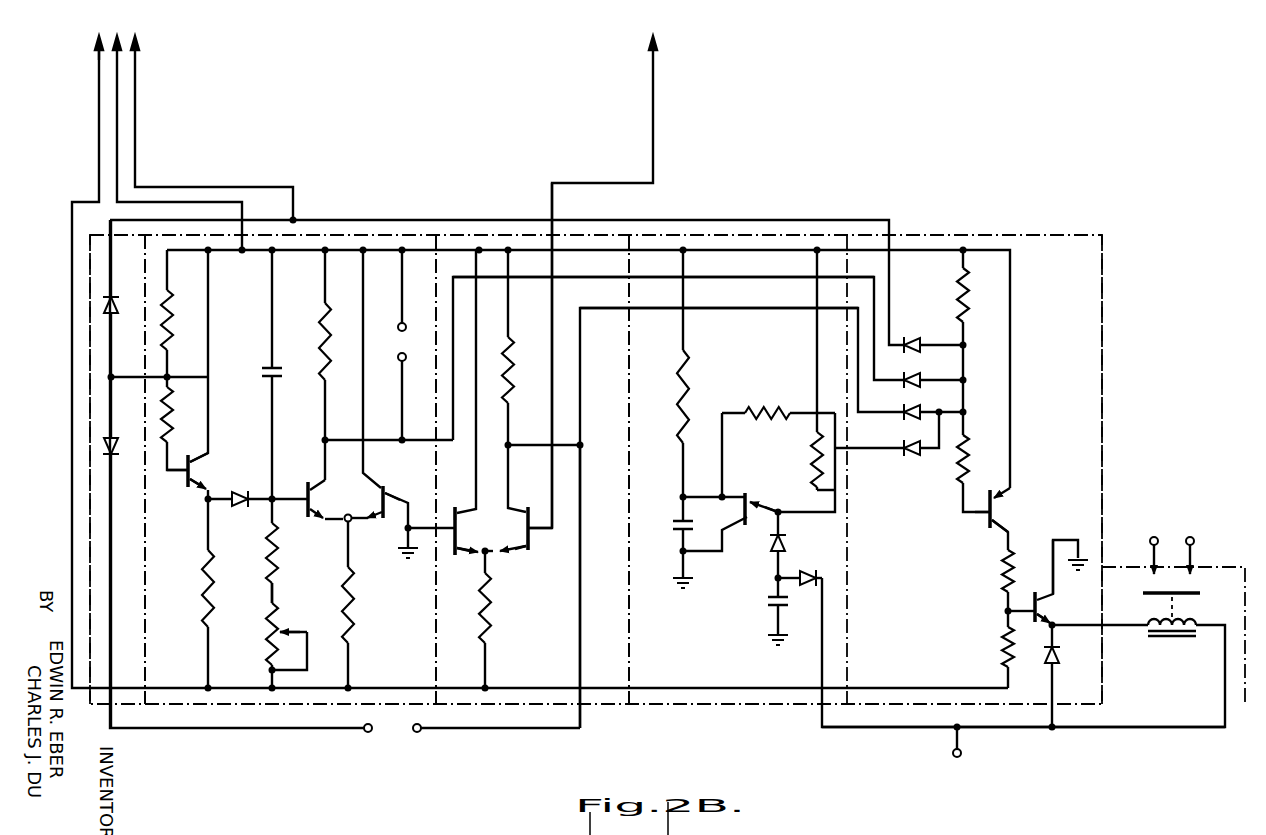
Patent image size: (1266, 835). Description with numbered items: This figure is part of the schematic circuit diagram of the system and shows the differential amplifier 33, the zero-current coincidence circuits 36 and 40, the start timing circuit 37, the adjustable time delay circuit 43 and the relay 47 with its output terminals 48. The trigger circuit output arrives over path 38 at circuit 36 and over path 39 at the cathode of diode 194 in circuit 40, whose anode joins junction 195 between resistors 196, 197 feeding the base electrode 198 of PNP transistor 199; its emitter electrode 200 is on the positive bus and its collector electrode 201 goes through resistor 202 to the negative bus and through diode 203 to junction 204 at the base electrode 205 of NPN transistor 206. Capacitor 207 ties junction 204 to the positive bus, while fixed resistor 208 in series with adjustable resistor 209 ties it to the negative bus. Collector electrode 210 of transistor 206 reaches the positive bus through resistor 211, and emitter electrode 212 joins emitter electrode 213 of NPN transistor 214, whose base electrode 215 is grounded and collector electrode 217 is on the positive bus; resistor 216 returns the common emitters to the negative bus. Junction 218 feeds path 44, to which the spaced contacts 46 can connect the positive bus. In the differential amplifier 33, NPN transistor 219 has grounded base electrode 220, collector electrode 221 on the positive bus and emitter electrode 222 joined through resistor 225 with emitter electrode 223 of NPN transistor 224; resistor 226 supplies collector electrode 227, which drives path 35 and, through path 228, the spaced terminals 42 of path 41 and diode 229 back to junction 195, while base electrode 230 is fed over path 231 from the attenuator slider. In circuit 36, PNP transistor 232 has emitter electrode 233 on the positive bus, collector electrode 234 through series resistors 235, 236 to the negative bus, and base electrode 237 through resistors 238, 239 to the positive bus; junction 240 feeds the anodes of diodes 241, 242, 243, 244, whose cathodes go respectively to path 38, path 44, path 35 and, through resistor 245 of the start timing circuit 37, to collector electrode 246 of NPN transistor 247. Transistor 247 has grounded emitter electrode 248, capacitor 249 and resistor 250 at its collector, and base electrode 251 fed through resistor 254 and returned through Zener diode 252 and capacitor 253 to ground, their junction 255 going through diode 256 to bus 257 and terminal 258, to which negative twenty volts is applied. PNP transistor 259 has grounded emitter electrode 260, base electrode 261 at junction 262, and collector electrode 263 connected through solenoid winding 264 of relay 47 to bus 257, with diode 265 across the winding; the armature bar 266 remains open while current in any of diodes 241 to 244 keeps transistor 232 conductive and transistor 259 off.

The differential amplifier 33 is at (505, 706).
The path 35 is at (583, 398).
The zero-current coincidence circuit 36 is at (1105, 350).
The start timing circuit 37 is at (686, 705).
The path 38 is at (410, 218).
The path 39 is at (147, 218).
The zero-current coincidence circuit 40 is at (97, 708).
The path 41 is at (170, 735).
The strap connectable circuit interruption 42 is at (396, 740).
The adjustable time delay circuit 43 is at (233, 710).
The path 44 is at (663, 290).
The strap connectable interruption 46 is at (392, 347).
The relay 47 is at (1230, 570).
The output terminals 48 is at (1180, 533).
The diode 194 is at (105, 308).
The junction 195 is at (208, 376).
The resistor 196 is at (170, 314).
The resistor 197 is at (175, 408).
The base electrode 198 is at (186, 490).
The PNP transistor 199 is at (212, 478).
The emitter electrode 200 is at (203, 461).
The collector electrode 201 is at (198, 484).
The resistor 202 is at (203, 605).
The diode 203 is at (238, 508).
The junction 204 is at (274, 504).
The base electrode 205 is at (312, 490).
The NPN transistor 206 is at (317, 497).
The capacitor 207 is at (279, 372).
The fixed resistor 208 is at (264, 571).
The adjustable resistor 209 is at (263, 625).
The collector electrode 210 is at (304, 453).
The resistor 211 is at (318, 307).
The emitter electrode 212 is at (306, 581).
The emitter electrode 213 is at (372, 518).
The NPN transistor 214 is at (392, 486).
The base electrode 215 is at (395, 494).
The resistor 216 is at (358, 605).
The collector electrode 217 is at (372, 478).
The junction 218 is at (323, 440).
The NPN transistor 219 is at (455, 503).
The base electrode 220 is at (452, 548).
The collector electrode 221 is at (466, 512).
The emitter electrode 222 is at (462, 556).
The emitter electrode 223 is at (522, 555).
The NPN transistor 224 is at (532, 556).
The resistor 225 is at (490, 622).
The resistor 226 is at (512, 357).
The collector electrode 227 is at (520, 505).
The path 228 is at (580, 660).
The diode 229 is at (105, 446).
The base electrode 230 is at (531, 537).
The path 231 is at (552, 322).
The PNP transistor 232 is at (980, 524).
The emitter electrode 233 is at (1000, 497).
The collector electrode 234 is at (1004, 524).
The resistor 235 is at (1001, 574).
The resistor 236 is at (1001, 641).
The base electrode 237 is at (967, 493).
The resistor 238 is at (970, 446).
The resistor 239 is at (967, 298).
The junction 240 is at (968, 380).
The diode 241 is at (914, 336).
The diode 242 is at (921, 378).
The diode 243 is at (937, 403).
The diode 244 is at (912, 455).
The resistor 245 is at (762, 407).
The collector electrode 246 is at (733, 495).
The NPN transistor 247 is at (738, 511).
The emitter electrode 248 is at (775, 579).
The capacitor 249 is at (672, 523).
The resistor 250 is at (688, 388).
The base electrode 251 is at (755, 502).
The Zener diode 252 is at (790, 541).
The capacitor 253 is at (770, 608).
The resistor 254 is at (838, 491).
The junction 255 is at (745, 596).
The diode 256 is at (803, 571).
The bus 257 is at (885, 730).
The terminal 258 is at (963, 752).
The PNP transistor 259 is at (1075, 605).
The emitter electrode 260 is at (1048, 594).
The base electrode 261 is at (1035, 620).
The junction 262 is at (1003, 610).
The collector electrode 263 is at (1052, 627).
The solenoid winding 264 is at (1148, 634).
The diode 265 is at (1060, 658).
The bar 266 is at (1200, 597).